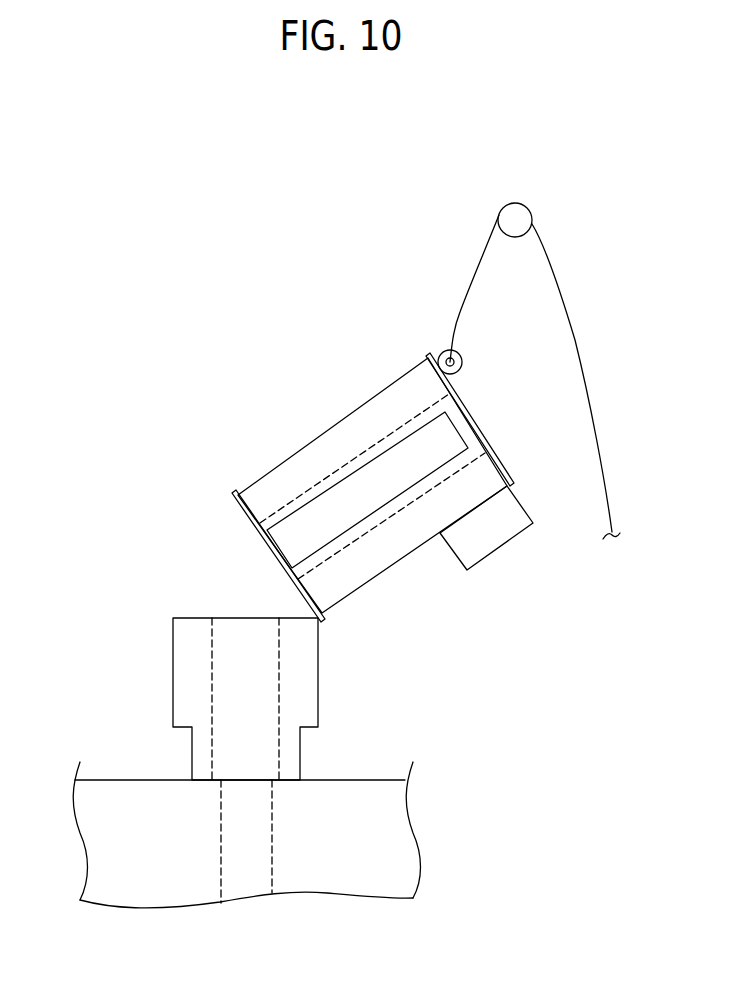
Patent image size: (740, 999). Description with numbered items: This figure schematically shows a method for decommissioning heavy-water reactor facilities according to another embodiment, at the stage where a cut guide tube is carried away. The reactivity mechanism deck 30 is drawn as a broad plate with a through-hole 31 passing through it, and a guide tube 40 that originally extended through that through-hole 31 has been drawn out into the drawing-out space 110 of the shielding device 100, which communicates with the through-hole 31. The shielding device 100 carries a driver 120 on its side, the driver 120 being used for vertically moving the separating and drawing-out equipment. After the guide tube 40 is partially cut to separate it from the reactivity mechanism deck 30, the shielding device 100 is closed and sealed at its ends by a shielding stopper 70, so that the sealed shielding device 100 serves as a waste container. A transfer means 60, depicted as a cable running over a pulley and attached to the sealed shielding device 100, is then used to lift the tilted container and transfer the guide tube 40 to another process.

The reactivity mechanism deck 30 is at (367, 780).
The through-hole 31 is at (272, 850).
The guide tube 40 is at (398, 445).
The transfer means 60 is at (475, 270).
The shielding stopper 70 is at (475, 418).
The shielding device 100 is at (268, 453).
The drawing-out space 110 is at (343, 552).
The driver 120 is at (493, 538).